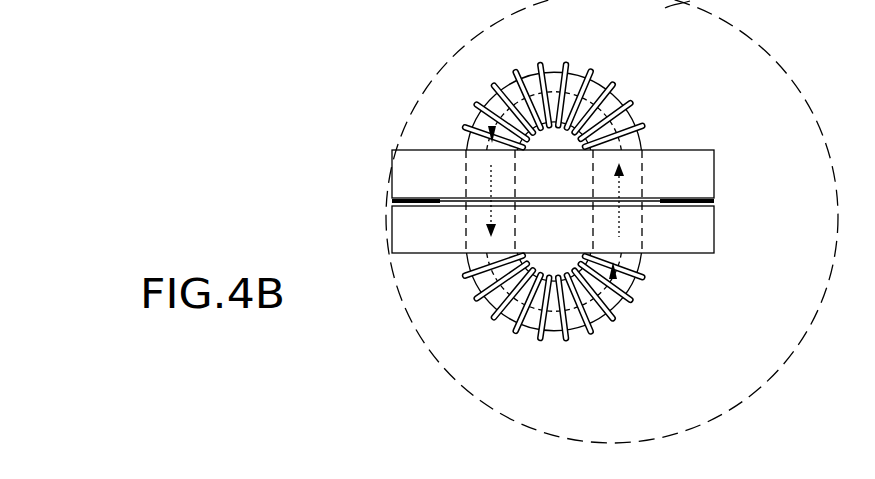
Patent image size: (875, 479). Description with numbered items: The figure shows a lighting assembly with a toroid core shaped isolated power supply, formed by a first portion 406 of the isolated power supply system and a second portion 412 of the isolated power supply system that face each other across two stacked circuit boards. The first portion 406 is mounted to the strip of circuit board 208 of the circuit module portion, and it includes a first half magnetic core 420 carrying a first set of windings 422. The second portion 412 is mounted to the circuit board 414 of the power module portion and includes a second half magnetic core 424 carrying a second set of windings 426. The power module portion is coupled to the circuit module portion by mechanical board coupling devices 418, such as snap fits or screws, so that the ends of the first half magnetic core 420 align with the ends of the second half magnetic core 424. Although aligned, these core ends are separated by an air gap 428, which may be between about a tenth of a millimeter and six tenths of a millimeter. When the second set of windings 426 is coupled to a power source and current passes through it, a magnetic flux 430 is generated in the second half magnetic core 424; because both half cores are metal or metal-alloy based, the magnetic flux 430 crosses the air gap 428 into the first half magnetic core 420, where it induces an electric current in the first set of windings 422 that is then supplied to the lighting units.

The circuit board 208 is at (688, 176).
The circuit board 414 is at (695, 243).
The mechanical board coupling devices 418 is at (392, 200).
The first portion of the isolated power supply system 406 is at (561, 159).
The second portion of the isolated power supply system 412 is at (562, 298).
The first set of windings 422 is at (498, 88).
The first half magnetic core 420 is at (480, 137).
The second half magnetic core 424 is at (473, 282).
The second set of windings 426 is at (495, 317).
The magnetic flux 430 is at (490, 173).
The air gap 428 is at (634, 194).